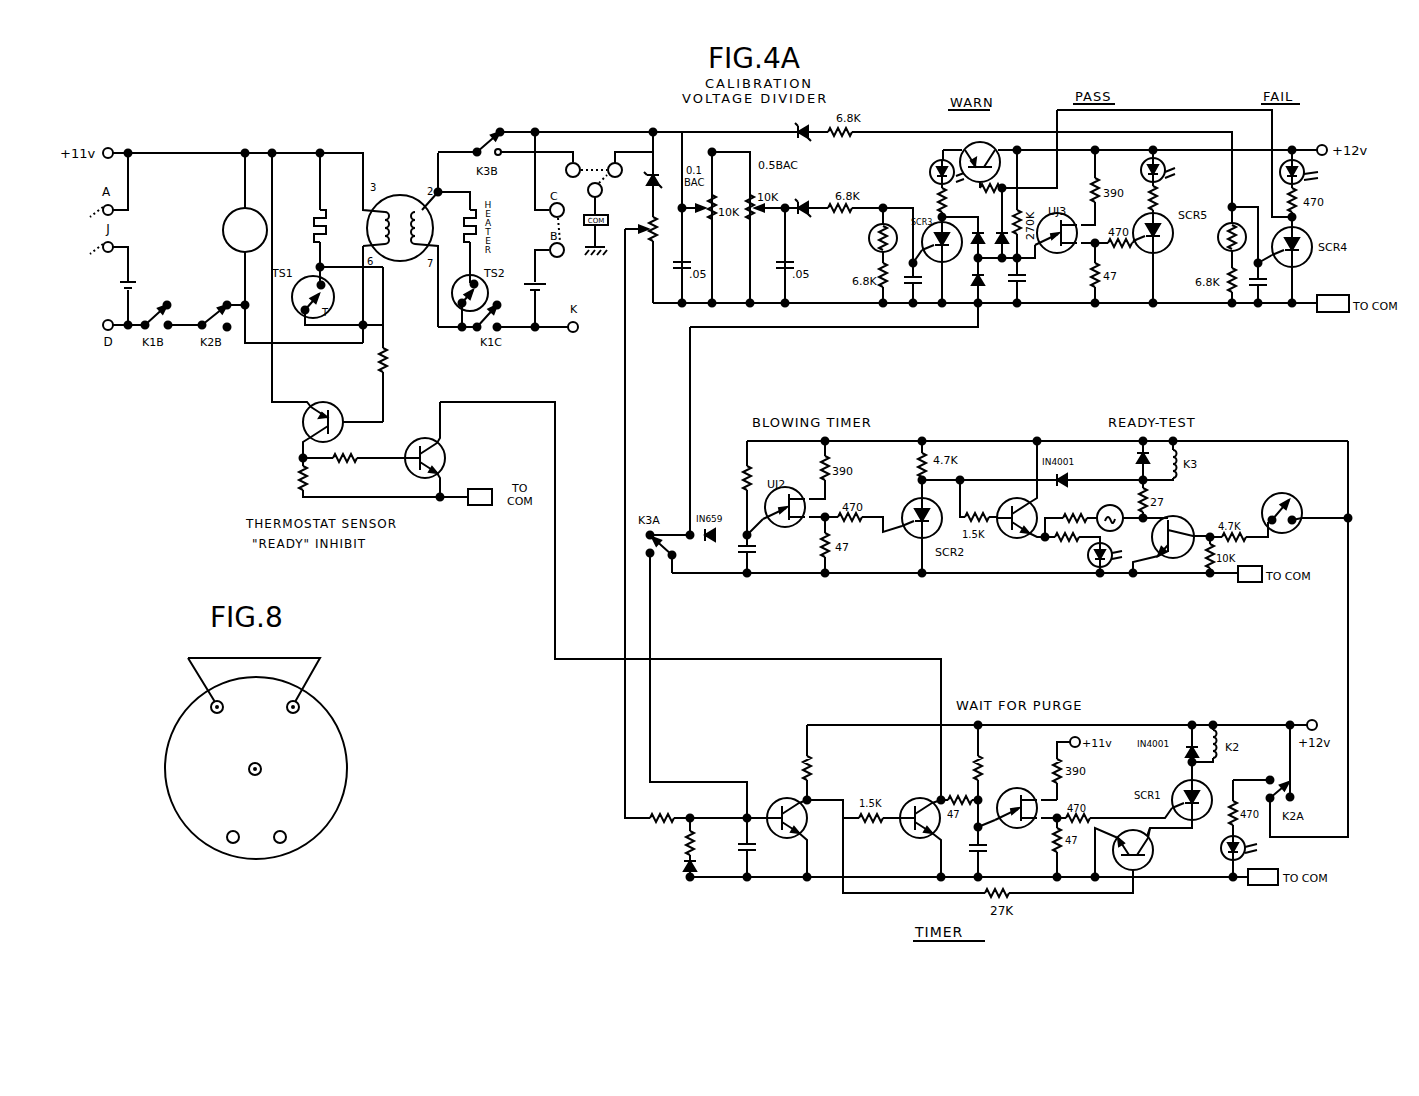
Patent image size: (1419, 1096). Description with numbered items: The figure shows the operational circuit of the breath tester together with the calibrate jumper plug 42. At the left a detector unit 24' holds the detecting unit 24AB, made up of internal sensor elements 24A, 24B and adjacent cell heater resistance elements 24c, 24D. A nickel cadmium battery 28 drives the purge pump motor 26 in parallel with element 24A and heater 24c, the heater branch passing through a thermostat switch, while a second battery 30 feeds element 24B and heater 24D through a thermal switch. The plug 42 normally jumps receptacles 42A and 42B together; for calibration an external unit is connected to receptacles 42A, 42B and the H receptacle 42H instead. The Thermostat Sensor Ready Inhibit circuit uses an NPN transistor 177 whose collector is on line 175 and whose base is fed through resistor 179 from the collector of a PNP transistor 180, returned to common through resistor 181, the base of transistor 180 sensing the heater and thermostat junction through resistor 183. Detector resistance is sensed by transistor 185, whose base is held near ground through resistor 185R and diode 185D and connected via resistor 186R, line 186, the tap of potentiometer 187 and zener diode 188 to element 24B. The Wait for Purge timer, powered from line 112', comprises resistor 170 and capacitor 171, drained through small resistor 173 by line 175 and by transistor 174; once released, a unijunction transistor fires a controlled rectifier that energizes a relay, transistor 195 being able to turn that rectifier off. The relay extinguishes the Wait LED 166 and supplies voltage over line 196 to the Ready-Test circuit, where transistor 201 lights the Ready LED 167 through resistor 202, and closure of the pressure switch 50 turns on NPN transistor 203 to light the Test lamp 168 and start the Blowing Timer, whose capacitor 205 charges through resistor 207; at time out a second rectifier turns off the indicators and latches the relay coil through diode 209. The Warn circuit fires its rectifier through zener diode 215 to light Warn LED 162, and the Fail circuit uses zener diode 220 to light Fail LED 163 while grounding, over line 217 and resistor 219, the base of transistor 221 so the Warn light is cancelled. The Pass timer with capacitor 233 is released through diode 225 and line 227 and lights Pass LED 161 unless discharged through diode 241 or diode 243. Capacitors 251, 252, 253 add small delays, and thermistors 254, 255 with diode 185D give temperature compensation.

In FIG. 4A, the detector unit 24' is at (385, 211).
In FIG. 4A, the detecting unit 24AB is at (404, 194).
In FIG. 4A, the internal sensor element 24A is at (374, 231).
In FIG. 4A, the internal sensor element 24B is at (414, 250).
In FIG. 4A, the cell heater resistance element 24c is at (327, 217).
In FIG. 4A, the second cell-heater element 24D is at (463, 230).
In FIG. 4A, the purge pump motor 26 is at (222, 240).
In FIG. 4A, the battery 28 is at (120, 287).
In FIG. 4A, the battery 30 is at (548, 284).
In FIG. 8, the calibration plug 42 is at (346, 800).
In FIG. 4A, the terminal 42A is at (566, 162).
In FIG. 4A, the terminal 42B is at (618, 163).
In FIG. 4A, the jumper plug pin H 42H is at (593, 168).
In FIG. 4A, the pressure switch 50 is at (1303, 500).
In FIG. 4A, the line 112' is at (1260, 713).
In FIG. 4A, the Pass LED 161 is at (1184, 172).
In FIG. 4A, the Warn LED 162 is at (930, 192).
In FIG. 4A, the Fail LED 163 is at (1330, 171).
In FIG. 4A, the Wait LED 166 is at (1219, 851).
In FIG. 4A, the Ready LED 167 is at (1088, 576).
In FIG. 4A, the Test lamp 168 is at (1118, 530).
In FIG. 4A, the resistor 170 is at (986, 759).
In FIG. 4A, the capacitor 171 is at (988, 849).
In FIG. 4A, the small resistor 173 is at (972, 765).
In FIG. 4A, the transistor 174 is at (905, 842).
In FIG. 4A, the line 175 is at (778, 659).
In FIG. 4A, the NPN transistor 177 is at (446, 449).
In FIG. 4A, the resistor 179 is at (370, 465).
In FIG. 4A, the PNP transistor 180 is at (300, 425).
In FIG. 4A, the resistor 181 is at (294, 477).
In FIG. 4A, the resistor 183 is at (388, 372).
In FIG. 4A, the transistor 185 is at (788, 796).
In FIG. 4A, the resistor 185R is at (686, 851).
In FIG. 4A, the diode 185D is at (686, 871).
In FIG. 4A, the line 186 is at (622, 711).
In FIG. 4A, the resistor 186R is at (687, 810).
In FIG. 4A, the potentiometer 187 is at (633, 240).
In FIG. 4A, the zener diode 188 is at (658, 172).
In FIG. 4A, the transistor 195 is at (1154, 856).
In FIG. 4A, the line 196 is at (1348, 658).
In FIG. 4A, the transistor 201 is at (1006, 546).
In FIG. 4A, the resistor 202 is at (1046, 512).
In FIG. 4A, the NPN transistor 203 is at (1210, 510).
In FIG. 4A, the timing capacitor 205 is at (726, 555).
In FIG. 4A, the resistor 207 is at (758, 474).
In FIG. 4A, the diode 209 is at (1066, 477).
In FIG. 4A, the zener diode 215 is at (811, 203).
In FIG. 4A, the line 217 is at (1198, 110).
In FIG. 4A, the resistor 219 is at (992, 184).
In FIG. 4A, the zener diode 220 is at (805, 126).
In FIG. 4A, the NPN transistor 221 is at (968, 142).
In FIG. 4A, the diode 225 is at (974, 262).
In FIG. 4A, the line 227 is at (808, 326).
In FIG. 4A, the capacitor 233 is at (1024, 306).
In FIG. 4A, the diode 241 is at (968, 300).
In FIG. 4A, the diode 243 is at (1000, 262).
In FIG. 4A, the capacitor 251 is at (908, 306).
In FIG. 4A, the capacitor 252 is at (1250, 308).
In FIG. 4A, the capacitor 253 is at (742, 854).
In FIG. 4A, the thermistor 254 is at (873, 252).
In FIG. 4A, the thermistor 255 is at (1210, 248).